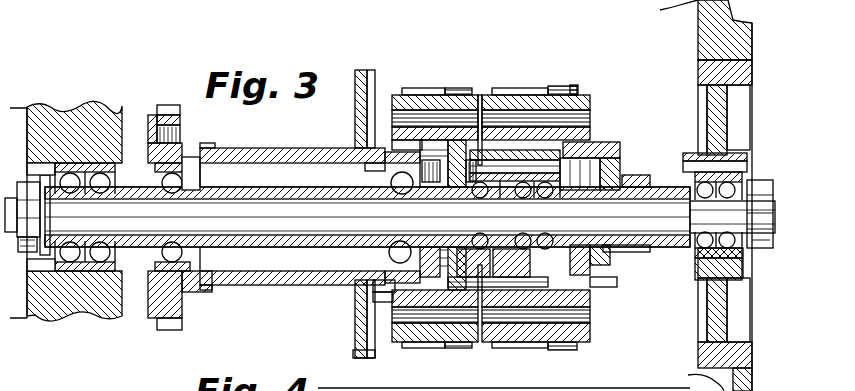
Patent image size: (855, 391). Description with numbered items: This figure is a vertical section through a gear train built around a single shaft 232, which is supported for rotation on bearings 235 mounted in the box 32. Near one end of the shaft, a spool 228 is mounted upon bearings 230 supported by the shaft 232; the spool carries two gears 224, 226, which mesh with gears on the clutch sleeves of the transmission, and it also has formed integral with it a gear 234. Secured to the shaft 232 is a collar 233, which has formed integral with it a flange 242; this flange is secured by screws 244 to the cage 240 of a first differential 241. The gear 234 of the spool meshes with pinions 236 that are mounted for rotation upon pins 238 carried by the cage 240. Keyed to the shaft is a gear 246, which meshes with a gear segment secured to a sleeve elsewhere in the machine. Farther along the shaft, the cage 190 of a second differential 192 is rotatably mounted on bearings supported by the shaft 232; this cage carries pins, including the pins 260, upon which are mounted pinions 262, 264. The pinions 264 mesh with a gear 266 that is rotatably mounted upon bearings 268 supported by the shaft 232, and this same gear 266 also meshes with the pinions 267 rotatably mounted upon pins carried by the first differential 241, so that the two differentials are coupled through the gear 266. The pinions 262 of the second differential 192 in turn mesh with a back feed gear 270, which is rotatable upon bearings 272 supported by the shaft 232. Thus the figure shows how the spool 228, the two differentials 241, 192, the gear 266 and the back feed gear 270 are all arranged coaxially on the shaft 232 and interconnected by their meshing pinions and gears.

The box 32 is at (705, 28).
The cage 190 is at (590, 331).
The differential 192 is at (581, 78).
The gear 224 is at (169, 112).
The gear 226 is at (364, 75).
The spool 228 is at (256, 150).
The bearings 230 is at (183, 268).
The shaft 232 is at (267, 232).
The collar 233 is at (375, 193).
The gear 234 is at (432, 262).
The bearings 235 is at (100, 262).
The pinions 236 is at (410, 100).
The pins 238 is at (430, 116).
The cage 240 is at (393, 300).
The differential 241 is at (406, 74).
The flange 242 is at (357, 288).
The screws 244 is at (365, 150).
The gear 246 is at (638, 175).
The pins 260 is at (590, 112).
The pinions 262 is at (578, 90).
The pinions 264 is at (528, 97).
The gear 266 is at (487, 150).
The pinions 267 is at (468, 90).
The bearings 268 is at (485, 240).
The back feed gear 270 is at (610, 148).
The bearings 272 is at (594, 245).